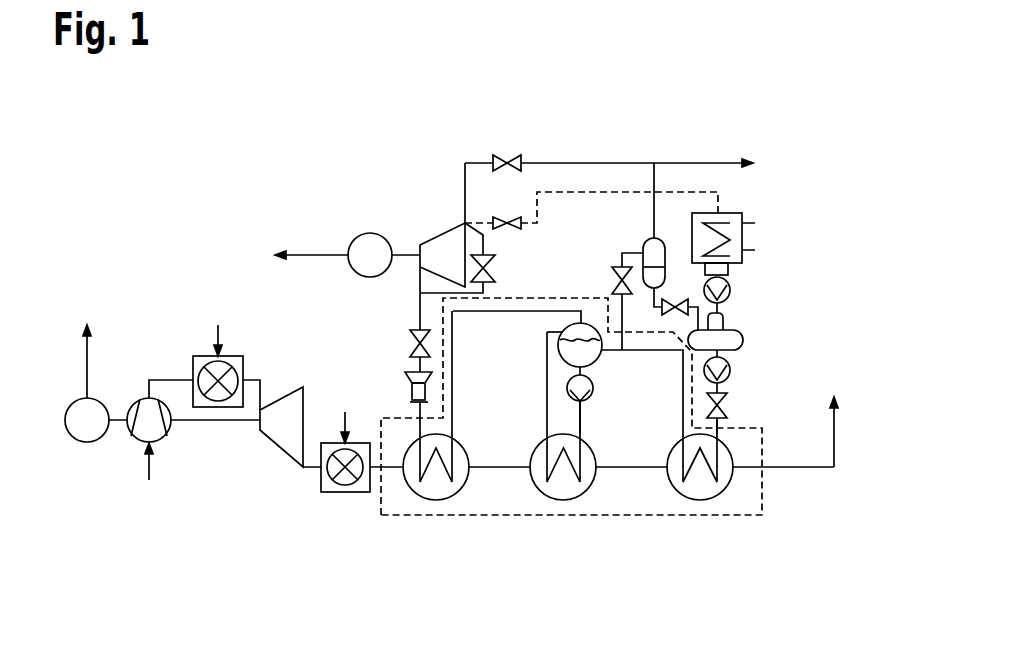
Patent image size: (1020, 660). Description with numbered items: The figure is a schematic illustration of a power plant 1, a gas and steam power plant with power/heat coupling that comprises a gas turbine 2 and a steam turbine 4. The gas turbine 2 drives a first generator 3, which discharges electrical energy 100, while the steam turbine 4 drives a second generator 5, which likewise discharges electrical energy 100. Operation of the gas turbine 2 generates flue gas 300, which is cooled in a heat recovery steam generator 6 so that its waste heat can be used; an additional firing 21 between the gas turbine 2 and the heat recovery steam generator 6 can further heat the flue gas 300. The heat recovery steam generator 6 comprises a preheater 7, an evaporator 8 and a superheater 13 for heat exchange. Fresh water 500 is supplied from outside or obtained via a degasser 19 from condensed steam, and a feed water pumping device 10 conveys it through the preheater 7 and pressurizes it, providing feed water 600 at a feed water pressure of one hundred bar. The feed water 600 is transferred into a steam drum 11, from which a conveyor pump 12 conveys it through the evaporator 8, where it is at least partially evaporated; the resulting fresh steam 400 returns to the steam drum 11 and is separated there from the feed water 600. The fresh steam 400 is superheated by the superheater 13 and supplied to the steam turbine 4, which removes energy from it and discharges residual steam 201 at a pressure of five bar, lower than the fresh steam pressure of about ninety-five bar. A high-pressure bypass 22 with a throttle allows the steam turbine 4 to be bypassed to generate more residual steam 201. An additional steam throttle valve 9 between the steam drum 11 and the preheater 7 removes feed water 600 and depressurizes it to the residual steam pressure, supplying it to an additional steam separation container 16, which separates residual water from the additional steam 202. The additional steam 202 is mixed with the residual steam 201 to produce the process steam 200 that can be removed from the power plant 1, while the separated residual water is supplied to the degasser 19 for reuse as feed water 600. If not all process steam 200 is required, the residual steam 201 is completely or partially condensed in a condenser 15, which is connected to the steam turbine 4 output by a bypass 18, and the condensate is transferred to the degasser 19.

The power plant 1 is at (143, 182).
The gas turbine 2 is at (190, 452).
The first generator 3 is at (84, 442).
The steam turbine 4 is at (435, 239).
The second generator 5 is at (356, 233).
The heat recovery steam generator 6 is at (763, 500).
The preheater 7 is at (710, 501).
The evaporator 8 is at (545, 501).
The additional steam throttle valve 9 is at (615, 278).
The feed water pumping device 10 is at (732, 377).
The steam drum 11 is at (597, 367).
The conveyor pump 12 is at (593, 399).
The superheater 13 is at (437, 501).
The condenser 15 is at (743, 220).
The additional steam separation container 16 is at (665, 240).
The bypass 18 is at (576, 192).
The degasser 19 is at (743, 330).
The additional firing 21 is at (308, 487).
The high-pressure bypass 22 is at (496, 270).
The electrical energy 100 is at (87, 368).
The process steam 200 is at (728, 162).
The residual steam 201 is at (563, 162).
The additional steam 202 is at (654, 178).
The flue gas 300 is at (834, 438).
The fresh steam 400 is at (420, 288).
The fresh water 500 is at (722, 308).
The feed water 600 is at (674, 394).